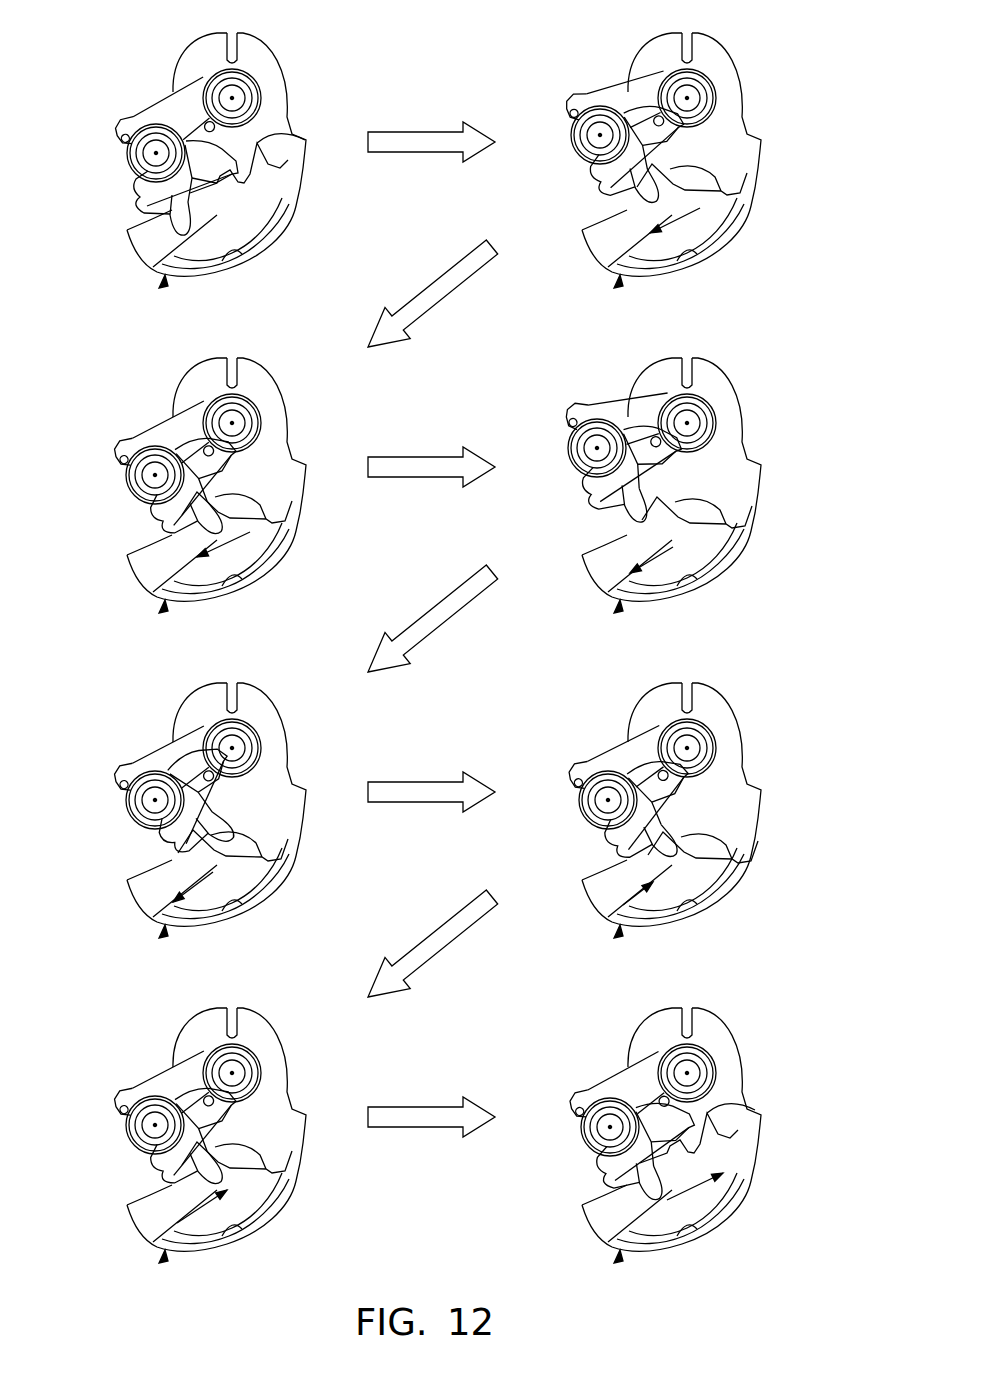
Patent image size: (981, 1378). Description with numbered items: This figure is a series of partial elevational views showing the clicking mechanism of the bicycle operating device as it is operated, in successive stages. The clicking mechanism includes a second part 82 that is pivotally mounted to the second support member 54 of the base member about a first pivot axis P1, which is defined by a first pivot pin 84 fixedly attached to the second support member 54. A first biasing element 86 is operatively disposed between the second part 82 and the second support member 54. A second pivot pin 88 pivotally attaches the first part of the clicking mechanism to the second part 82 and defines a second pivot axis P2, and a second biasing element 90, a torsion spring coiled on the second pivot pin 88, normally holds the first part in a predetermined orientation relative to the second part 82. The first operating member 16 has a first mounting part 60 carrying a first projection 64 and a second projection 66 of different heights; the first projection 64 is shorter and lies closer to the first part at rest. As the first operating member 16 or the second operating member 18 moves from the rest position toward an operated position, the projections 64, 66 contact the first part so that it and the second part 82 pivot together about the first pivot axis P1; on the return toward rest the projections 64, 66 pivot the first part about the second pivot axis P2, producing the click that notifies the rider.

The first operating member 16 is at (163, 288).
The second operating member 18 is at (147, 213).
The second support member 54 is at (147, 243).
The first mounting part 60 is at (270, 202).
The first projection 64 is at (236, 160).
The second projection 66 is at (270, 137).
The second part 82 is at (173, 107).
The first pivot pin 84 is at (207, 82).
The first biasing element 86 is at (232, 53).
The second pivot pin 88 is at (157, 115).
The second biasing element 90 is at (123, 140).
The first pivot axis P1 is at (236, 96).
The second pivot axis P2 is at (153, 155).